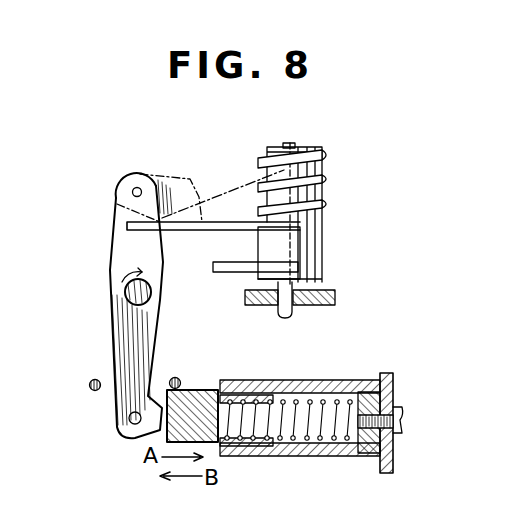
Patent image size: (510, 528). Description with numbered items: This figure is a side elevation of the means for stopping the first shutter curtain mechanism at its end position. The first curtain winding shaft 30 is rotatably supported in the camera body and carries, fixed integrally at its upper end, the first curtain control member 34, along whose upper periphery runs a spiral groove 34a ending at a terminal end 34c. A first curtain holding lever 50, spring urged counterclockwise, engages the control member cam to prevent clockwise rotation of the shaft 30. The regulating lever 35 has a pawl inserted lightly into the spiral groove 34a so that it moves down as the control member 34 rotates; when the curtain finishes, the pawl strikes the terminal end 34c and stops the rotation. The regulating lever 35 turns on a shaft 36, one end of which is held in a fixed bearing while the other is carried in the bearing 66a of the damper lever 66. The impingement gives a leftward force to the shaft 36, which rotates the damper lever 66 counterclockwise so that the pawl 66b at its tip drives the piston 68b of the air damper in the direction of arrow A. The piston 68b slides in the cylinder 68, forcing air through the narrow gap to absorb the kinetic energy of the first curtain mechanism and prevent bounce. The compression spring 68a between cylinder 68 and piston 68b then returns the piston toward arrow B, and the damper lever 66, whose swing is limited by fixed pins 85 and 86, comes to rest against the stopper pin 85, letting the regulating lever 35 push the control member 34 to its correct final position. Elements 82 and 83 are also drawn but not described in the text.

The first curtain winding shaft 30 is at (290, 143).
The first curtain control member 34 is at (310, 258).
The spiral groove 34a is at (322, 172).
The terminal end of the spiral groove 34c is at (316, 217).
The regulating lever 35 is at (228, 221).
The shaft 36 is at (158, 180).
The first curtain holding lever 50 is at (226, 272).
The damper lever 66 is at (153, 258).
The bearing 66a is at (131, 183).
The pawl 66b is at (150, 428).
The cylinder 68 is at (285, 457).
The compression spring 68a is at (330, 437).
The piston 68b is at (210, 390).
The end cap 82 is at (392, 378).
The pin 83 is at (124, 292).
The stopper pin 85 is at (93, 380).
The pin 86 is at (176, 378).